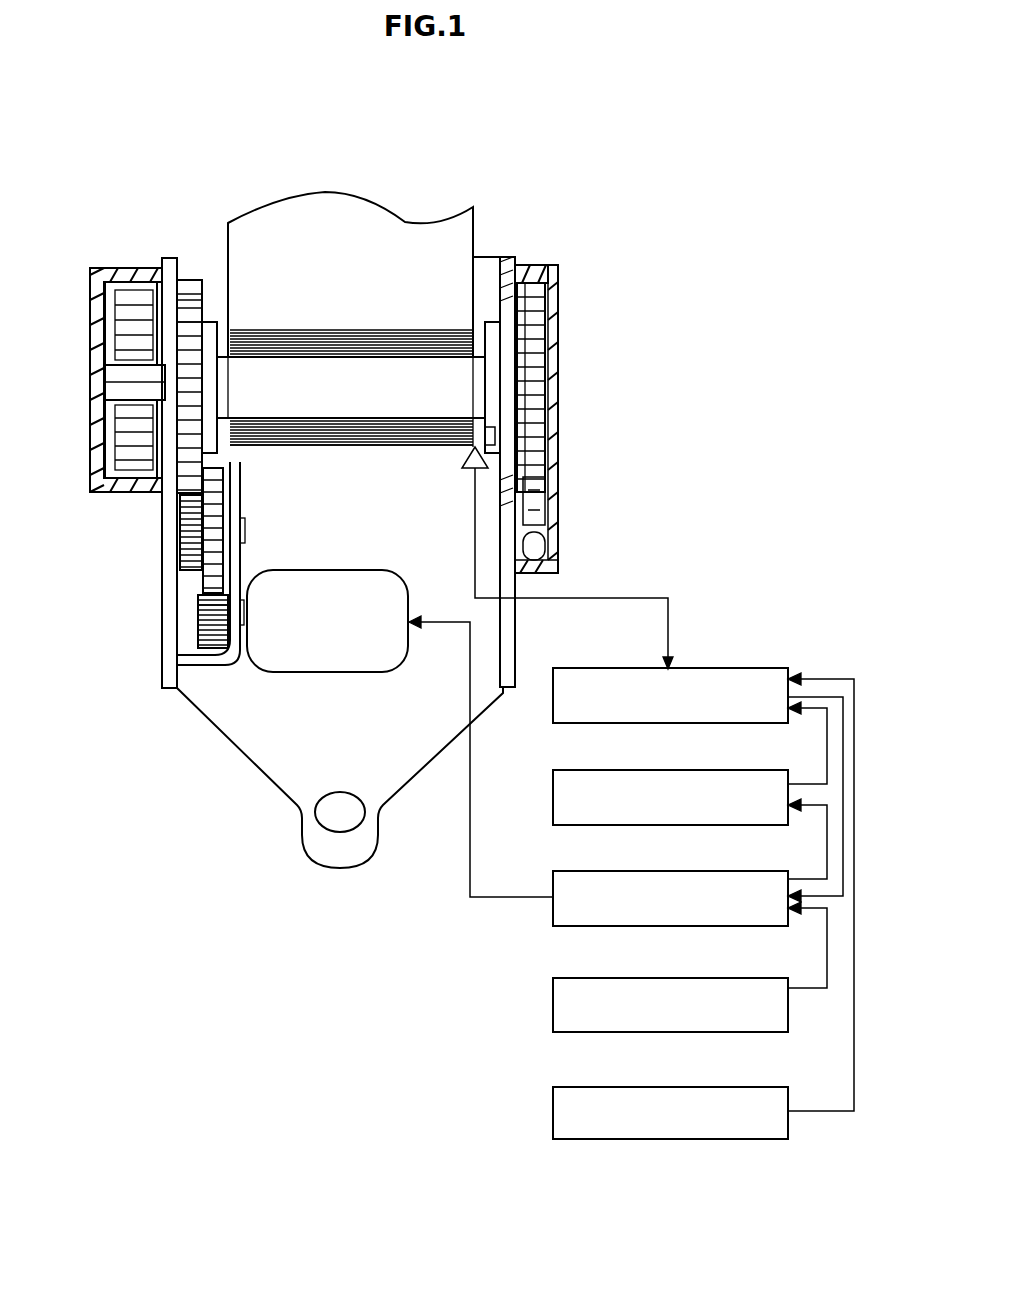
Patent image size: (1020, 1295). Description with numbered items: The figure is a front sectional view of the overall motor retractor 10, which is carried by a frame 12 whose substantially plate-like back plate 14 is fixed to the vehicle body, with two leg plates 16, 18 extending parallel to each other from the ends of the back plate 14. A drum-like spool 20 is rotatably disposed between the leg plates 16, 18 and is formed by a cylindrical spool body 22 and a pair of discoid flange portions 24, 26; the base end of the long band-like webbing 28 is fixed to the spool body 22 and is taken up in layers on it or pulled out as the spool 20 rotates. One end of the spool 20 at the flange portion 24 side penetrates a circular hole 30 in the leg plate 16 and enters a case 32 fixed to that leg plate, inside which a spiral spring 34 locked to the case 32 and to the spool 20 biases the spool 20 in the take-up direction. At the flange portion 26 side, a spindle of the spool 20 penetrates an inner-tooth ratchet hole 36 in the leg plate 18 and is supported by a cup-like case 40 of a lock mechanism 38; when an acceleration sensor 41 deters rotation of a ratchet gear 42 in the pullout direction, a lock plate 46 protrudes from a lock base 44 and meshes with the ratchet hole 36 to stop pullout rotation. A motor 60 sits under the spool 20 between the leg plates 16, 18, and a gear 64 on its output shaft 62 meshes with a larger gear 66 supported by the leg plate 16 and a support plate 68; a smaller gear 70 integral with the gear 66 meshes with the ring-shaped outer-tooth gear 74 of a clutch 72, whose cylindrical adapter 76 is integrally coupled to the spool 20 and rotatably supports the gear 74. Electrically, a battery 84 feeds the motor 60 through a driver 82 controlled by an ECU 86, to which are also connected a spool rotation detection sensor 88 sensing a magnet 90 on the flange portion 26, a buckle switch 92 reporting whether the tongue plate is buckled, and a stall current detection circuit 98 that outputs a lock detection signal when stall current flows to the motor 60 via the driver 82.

The motor retractor 10 is at (424, 153).
The frame 12 is at (236, 758).
The back plate 14 is at (277, 768).
The leg plate 16 is at (162, 678).
The leg plate 18 is at (515, 652).
The spool 20 is at (372, 395).
The spool body 22 is at (316, 408).
The flange portion 24 is at (218, 388).
The flange portion 26 is at (486, 388).
The webbing 28 is at (412, 238).
The circular hole 30 is at (112, 366).
The case 32 is at (92, 310).
The spiral spring 34 is at (132, 288).
The ratchet hole 36 is at (548, 452).
The lock mechanism 38 is at (562, 258).
The case 40 is at (528, 270).
The acceleration sensor 41 is at (543, 522).
The ratchet gear 42 is at (540, 358).
The lock base 44 is at (520, 392).
The lock plate 46 is at (522, 332).
The motor 60 is at (340, 570).
The output shaft 62 is at (200, 623).
The gear 64 is at (200, 598).
The gear 66 is at (225, 490).
The support plate 68 is at (241, 566).
The gear 70 is at (185, 545).
The clutch 72 is at (188, 285).
The gear 74 is at (203, 305).
The adapter 76 is at (118, 400).
The driver 82 is at (714, 871).
The battery 84 is at (714, 978).
The ECU 86 is at (590, 668).
The spool rotation detection sensor 88 is at (463, 460).
The magnet 90 is at (486, 432).
The buckle switch 92 is at (714, 1087).
The stall current detection circuit 98 is at (714, 770).